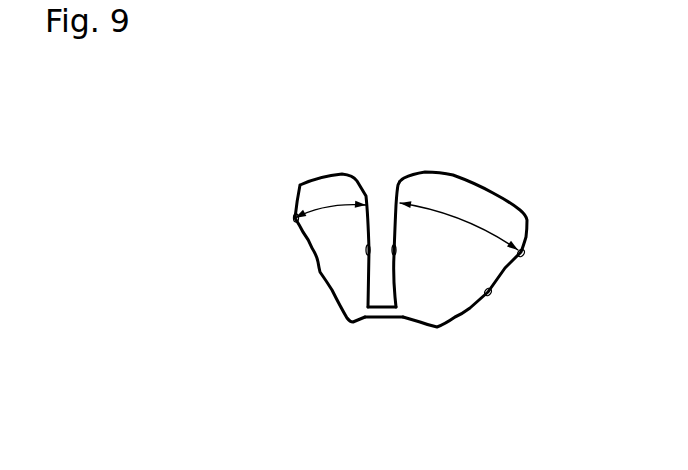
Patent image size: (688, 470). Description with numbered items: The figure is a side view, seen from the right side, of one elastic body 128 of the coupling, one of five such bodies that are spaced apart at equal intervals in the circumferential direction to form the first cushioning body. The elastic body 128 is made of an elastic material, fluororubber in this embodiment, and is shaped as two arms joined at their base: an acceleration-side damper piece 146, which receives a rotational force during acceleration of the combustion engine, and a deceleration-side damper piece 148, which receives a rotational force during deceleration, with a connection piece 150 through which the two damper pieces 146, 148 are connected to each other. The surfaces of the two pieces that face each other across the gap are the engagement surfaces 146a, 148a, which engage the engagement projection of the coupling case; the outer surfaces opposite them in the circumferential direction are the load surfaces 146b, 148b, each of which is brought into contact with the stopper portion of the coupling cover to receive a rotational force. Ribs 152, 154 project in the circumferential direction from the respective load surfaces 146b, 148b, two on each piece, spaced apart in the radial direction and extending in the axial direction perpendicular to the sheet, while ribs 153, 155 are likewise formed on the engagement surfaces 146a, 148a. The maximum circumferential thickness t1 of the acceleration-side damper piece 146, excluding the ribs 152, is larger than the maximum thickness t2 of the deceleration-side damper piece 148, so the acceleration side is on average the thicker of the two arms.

The elastic body 128 is at (410, 302).
The acceleration-side damper piece 146 is at (438, 293).
The deceleration-side damper piece 148 is at (343, 284).
The connection piece 150 is at (380, 343).
The engagement surface 146a is at (391, 205).
The engagement surface 148a is at (369, 203).
The load surface 146b is at (506, 269).
The load surface 148b is at (313, 248).
The ribs 152 is at (525, 254).
The ribs 153 is at (399, 181).
The ribs 154 is at (296, 222).
The ribs 155 is at (365, 192).
The maximum thickness of acceleration-side damper piece t1 is at (468, 221).
The maximum thickness of deceleration-side damper piece t2 is at (328, 207).